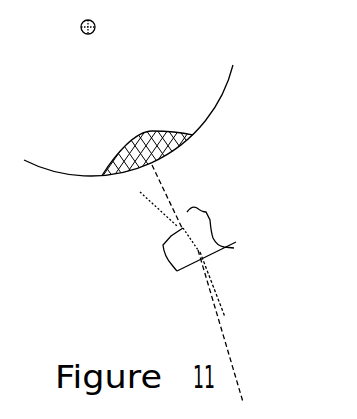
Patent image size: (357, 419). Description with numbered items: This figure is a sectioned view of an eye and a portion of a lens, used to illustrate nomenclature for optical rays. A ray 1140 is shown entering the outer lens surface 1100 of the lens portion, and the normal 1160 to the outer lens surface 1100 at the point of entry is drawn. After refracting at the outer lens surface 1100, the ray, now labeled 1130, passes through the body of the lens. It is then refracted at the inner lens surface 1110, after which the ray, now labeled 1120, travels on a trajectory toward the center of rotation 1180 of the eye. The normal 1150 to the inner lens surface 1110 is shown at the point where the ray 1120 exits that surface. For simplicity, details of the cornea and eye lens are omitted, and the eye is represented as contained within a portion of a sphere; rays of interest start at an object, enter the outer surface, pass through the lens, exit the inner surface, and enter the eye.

The outer lens surface 1100 is at (191, 272).
The inner lens surface 1110 is at (172, 237).
The ray 1120 is at (168, 187).
The ray 1130 is at (196, 239).
The ray 1140 is at (225, 331).
The normal 1150 is at (150, 207).
The normal 1160 is at (217, 290).
The center of rotation 1180 is at (102, 35).